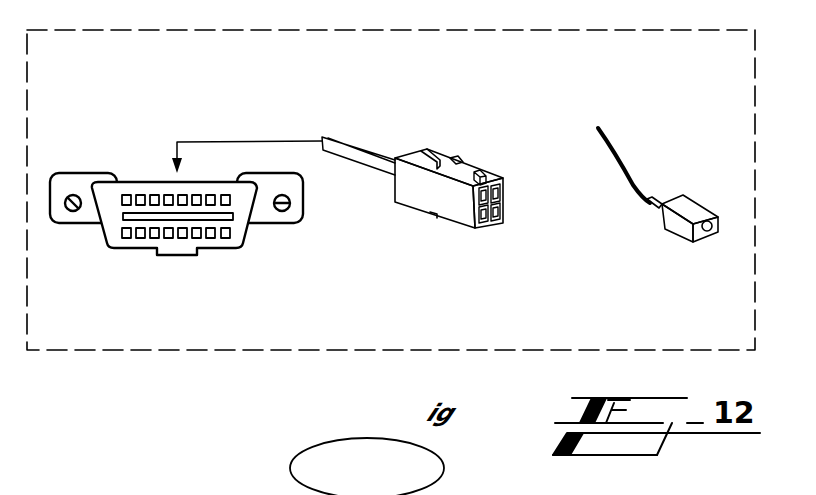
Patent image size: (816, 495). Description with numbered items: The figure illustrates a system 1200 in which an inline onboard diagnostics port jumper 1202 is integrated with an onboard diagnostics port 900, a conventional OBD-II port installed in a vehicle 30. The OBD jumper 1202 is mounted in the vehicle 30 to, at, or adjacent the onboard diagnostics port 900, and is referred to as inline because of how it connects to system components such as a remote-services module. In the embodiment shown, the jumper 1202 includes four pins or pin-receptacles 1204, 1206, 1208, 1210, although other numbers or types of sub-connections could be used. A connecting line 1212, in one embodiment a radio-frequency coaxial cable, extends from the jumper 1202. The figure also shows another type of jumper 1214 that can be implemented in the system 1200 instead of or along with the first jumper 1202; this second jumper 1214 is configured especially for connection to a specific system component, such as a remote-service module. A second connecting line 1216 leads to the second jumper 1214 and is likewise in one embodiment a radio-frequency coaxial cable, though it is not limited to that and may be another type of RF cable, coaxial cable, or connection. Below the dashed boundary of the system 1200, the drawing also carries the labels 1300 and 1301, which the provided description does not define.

The vehicle 30 is at (323, 318).
The onboard diagnostics port 900 is at (85, 136).
The system 1200 is at (215, 280).
The onboard diagnostics port jumper 1202 is at (433, 110).
The pin or pin-receptacle 1204 is at (483, 172).
The pin or pin-receptacle 1206 is at (505, 190).
The pin or pin-receptacle 1208 is at (505, 205).
The pin or pin-receptacle 1210 is at (492, 224).
The connecting line 1212 is at (358, 146).
The second jumper 1214 is at (650, 250).
The second connecting line 1216 is at (630, 175).
The mobile device 1300 is at (204, 468).
The application 1301 is at (397, 482).